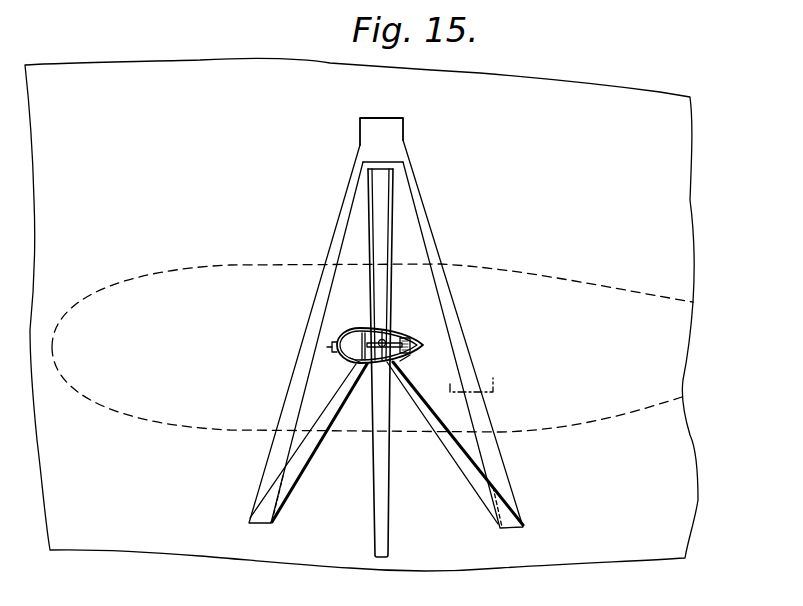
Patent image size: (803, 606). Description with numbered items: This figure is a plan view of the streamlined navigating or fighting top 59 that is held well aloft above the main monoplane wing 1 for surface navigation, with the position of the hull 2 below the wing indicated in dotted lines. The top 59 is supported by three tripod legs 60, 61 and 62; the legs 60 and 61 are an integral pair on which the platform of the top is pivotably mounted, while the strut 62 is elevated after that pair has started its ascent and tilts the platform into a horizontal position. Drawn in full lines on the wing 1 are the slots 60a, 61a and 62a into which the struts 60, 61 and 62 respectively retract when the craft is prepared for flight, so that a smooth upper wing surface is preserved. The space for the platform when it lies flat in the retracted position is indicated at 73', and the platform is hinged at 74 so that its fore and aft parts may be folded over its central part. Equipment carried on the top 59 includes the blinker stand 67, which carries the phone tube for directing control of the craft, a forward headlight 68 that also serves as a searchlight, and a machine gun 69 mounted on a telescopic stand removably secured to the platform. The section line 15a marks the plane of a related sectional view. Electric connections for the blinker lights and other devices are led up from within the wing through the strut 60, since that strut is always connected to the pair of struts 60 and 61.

The main monoplane wing 1 is at (110, 78).
The hull 2 is at (678, 336).
The space for the platform 73' is at (405, 140).
The slot 60a is at (268, 461).
The slot 61a is at (497, 461).
The tripod leg 60 is at (303, 467).
The tripod leg 61 is at (468, 470).
The strut 62 is at (388, 245).
The slot 62a is at (388, 476).
The fighting top 59 is at (354, 331).
The forward headlight 68 is at (327, 347).
The machine gun 69 is at (386, 331).
The blinker stand 67 is at (408, 342).
The hinge 74 is at (348, 358).
The section line 15a is at (472, 372).